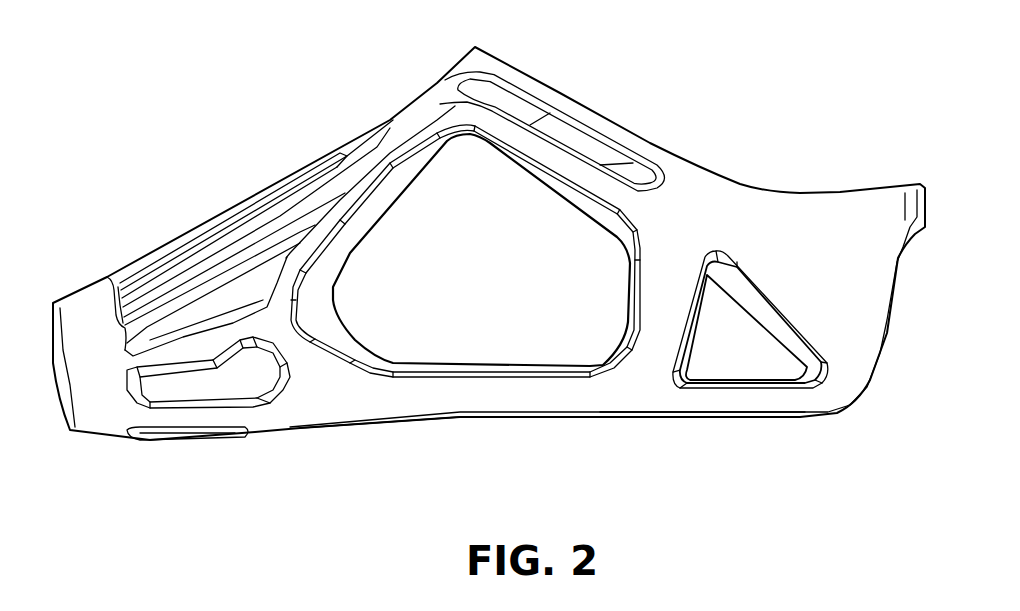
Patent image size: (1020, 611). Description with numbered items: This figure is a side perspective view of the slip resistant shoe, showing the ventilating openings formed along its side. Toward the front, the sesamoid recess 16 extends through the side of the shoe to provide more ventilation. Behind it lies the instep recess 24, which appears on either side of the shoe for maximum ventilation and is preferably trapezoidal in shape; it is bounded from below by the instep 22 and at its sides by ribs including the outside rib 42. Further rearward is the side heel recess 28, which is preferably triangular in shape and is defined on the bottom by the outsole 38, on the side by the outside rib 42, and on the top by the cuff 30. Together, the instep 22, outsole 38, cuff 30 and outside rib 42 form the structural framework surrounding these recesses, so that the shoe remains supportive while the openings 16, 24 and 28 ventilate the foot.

The sesamoid recess 16 is at (233, 390).
The instep 22 is at (463, 401).
The instep recess 24 is at (425, 342).
The side heel recess 28 is at (757, 373).
The cuff 30 is at (828, 207).
The outsole 38 is at (640, 400).
The outside rib 42 is at (655, 327).